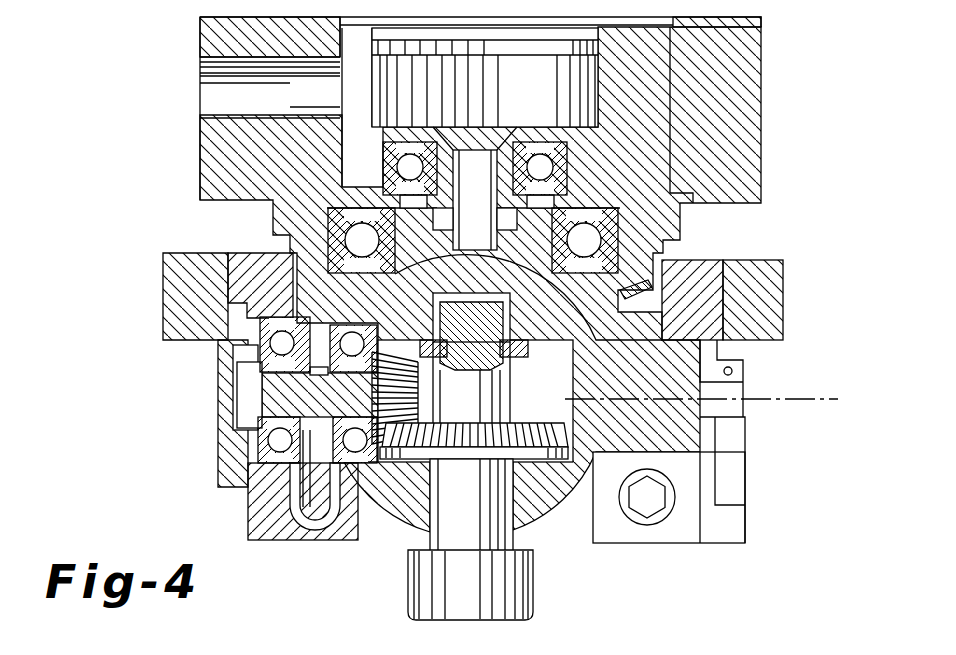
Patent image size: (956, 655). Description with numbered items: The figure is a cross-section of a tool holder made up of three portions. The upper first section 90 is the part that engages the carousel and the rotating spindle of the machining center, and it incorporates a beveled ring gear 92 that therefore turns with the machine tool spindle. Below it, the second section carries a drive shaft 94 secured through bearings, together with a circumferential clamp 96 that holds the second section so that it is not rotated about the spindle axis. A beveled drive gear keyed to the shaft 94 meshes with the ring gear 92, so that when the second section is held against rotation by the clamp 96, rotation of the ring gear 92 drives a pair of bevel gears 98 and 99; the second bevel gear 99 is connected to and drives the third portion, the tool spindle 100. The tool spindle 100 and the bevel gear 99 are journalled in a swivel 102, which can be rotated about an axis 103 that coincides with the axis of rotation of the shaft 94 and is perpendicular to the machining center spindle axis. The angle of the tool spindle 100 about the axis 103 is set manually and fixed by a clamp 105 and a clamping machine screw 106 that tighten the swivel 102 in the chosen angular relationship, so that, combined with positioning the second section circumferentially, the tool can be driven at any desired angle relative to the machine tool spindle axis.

The first section 90 is at (653, 60).
The beveled ring gear 92 is at (665, 290).
The drive shaft 94 is at (283, 402).
The circumferential clamp 96 is at (180, 318).
The bevel gear 98 is at (400, 403).
The bevel gear 99 is at (494, 420).
The tool spindle 100 is at (510, 538).
The swivel 102 is at (697, 444).
The axis 103 is at (790, 399).
The clamp 105 is at (676, 527).
The clamping machine screw 106 is at (647, 523).